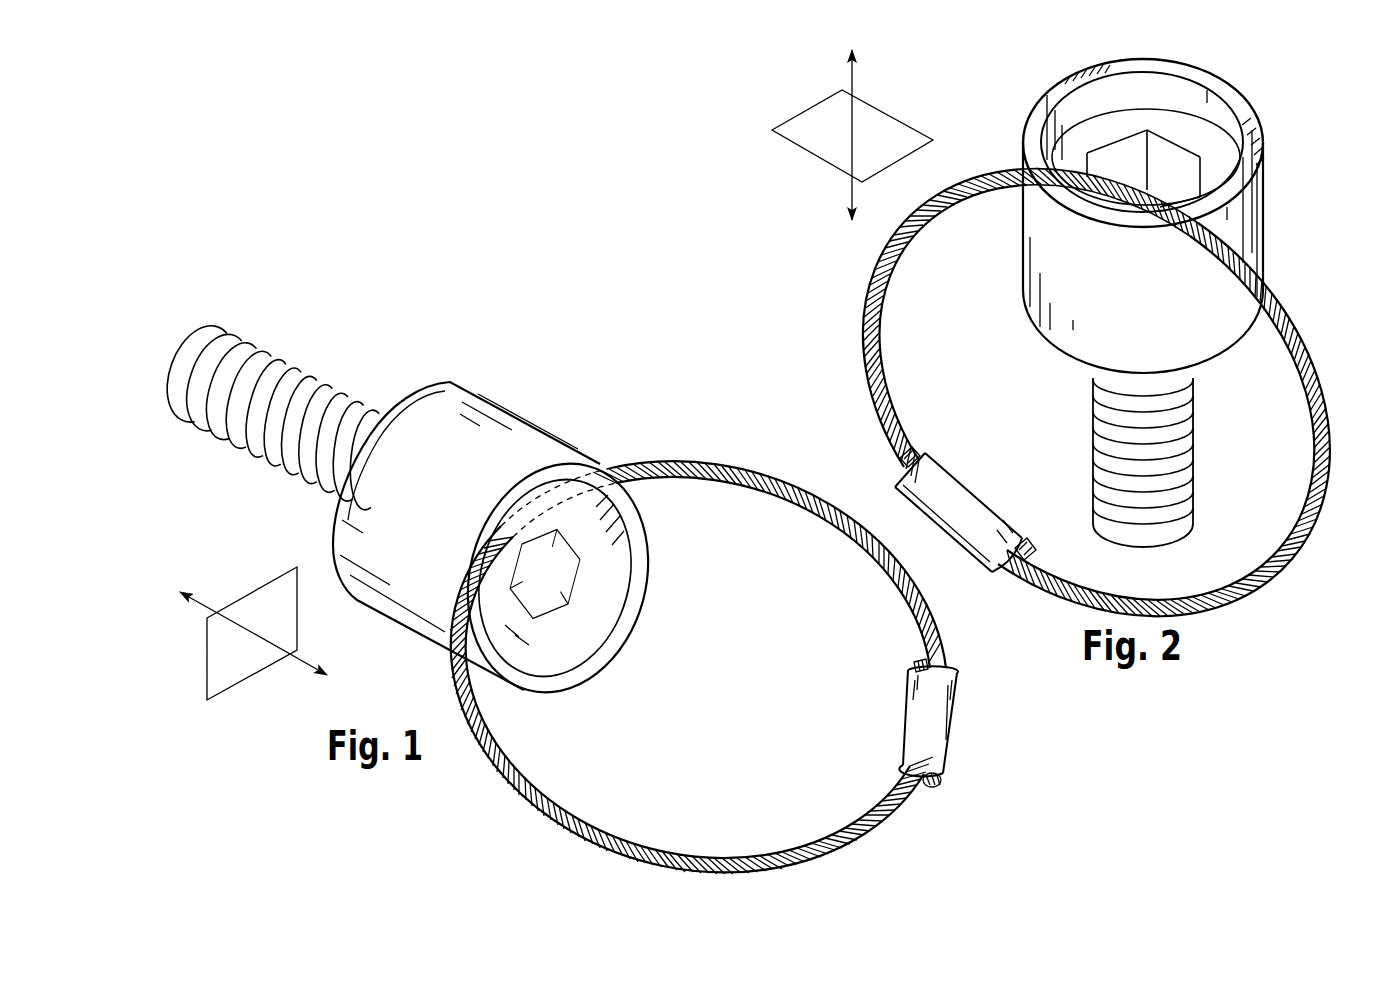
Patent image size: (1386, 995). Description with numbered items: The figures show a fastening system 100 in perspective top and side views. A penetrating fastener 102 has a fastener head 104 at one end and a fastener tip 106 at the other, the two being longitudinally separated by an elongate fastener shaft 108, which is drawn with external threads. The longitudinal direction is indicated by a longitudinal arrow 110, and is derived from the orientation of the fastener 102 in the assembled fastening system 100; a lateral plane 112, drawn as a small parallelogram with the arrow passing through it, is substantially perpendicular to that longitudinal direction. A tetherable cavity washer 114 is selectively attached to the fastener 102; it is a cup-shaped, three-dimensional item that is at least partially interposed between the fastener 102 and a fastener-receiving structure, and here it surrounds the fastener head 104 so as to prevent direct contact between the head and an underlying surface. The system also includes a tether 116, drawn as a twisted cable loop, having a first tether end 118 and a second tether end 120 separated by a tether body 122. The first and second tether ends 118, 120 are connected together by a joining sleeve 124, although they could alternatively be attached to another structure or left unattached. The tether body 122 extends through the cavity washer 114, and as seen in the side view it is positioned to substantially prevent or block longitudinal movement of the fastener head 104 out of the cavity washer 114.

In FIG. 1, the fastening system 100 is at (587, 565).
In FIG. 2, the fastening system 100 is at (1074, 333).
In FIG. 1, the penetrating fastener 102 is at (452, 485).
In FIG. 2, the penetrating fastener 102 is at (1173, 303).
In FIG. 1, the fastener head 104 is at (664, 532).
In FIG. 2, the fastener head 104 is at (1080, 145).
In FIG. 1, the fastener tip 106 is at (181, 320).
In FIG. 2, the fastener tip 106 is at (1198, 521).
In FIG. 1, the fastener shaft 108 is at (267, 383).
In FIG. 2, the fastener shaft 108 is at (1186, 462).
In FIG. 1, the longitudinal arrow 110 is at (212, 606).
In FIG. 2, the longitudinal arrow 110 is at (855, 78).
In FIG. 1, the lateral plane 112 is at (291, 617).
In FIG. 2, the lateral plane 112 is at (909, 153).
In FIG. 1, the tetherable cavity washer 114 is at (541, 526).
In FIG. 2, the tetherable cavity washer 114 is at (1158, 216).
In FIG. 1, the tether 116 is at (733, 667).
In FIG. 2, the tether 116 is at (1101, 392).
In FIG. 1, the first tether end 118 is at (944, 779).
In FIG. 2, the first tether end 118 is at (1030, 558).
In FIG. 1, the second tether end 120 is at (905, 661).
In FIG. 2, the second tether end 120 is at (913, 442).
In FIG. 1, the tether body 122 is at (514, 745).
In FIG. 2, the tether body 122 is at (961, 200).
In FIG. 1, the joining sleeve 124 is at (912, 745).
In FIG. 2, the joining sleeve 124 is at (947, 486).